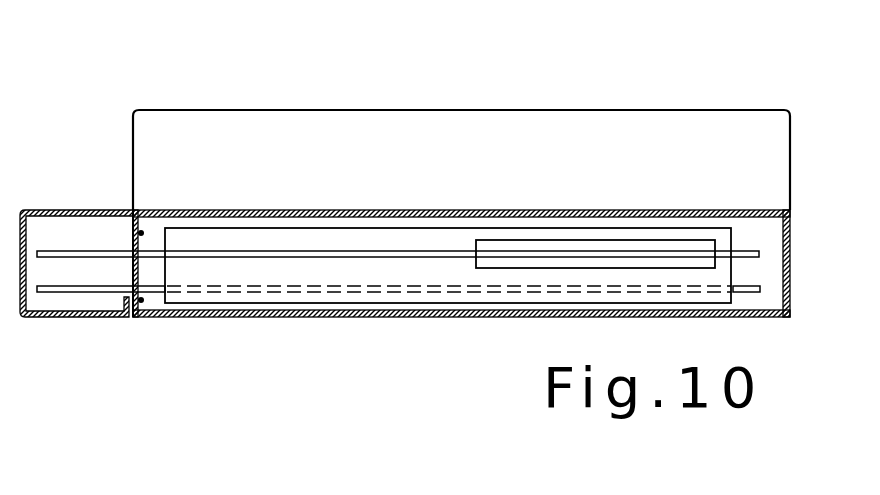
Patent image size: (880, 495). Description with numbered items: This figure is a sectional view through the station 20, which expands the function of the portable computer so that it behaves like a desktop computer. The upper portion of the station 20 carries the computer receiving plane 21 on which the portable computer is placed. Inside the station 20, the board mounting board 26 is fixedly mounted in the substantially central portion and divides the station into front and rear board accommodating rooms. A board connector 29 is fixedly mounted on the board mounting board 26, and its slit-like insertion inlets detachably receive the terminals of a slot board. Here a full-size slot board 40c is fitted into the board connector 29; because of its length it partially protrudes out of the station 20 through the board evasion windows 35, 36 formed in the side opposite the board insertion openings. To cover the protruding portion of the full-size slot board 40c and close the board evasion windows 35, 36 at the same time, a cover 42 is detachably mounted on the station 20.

The station 20 is at (686, 103).
The computer receiving plane 21 is at (453, 208).
The cover 42 is at (95, 211).
The board mounting board 26 is at (367, 237).
The board connector 29 is at (612, 245).
The full-size slot board 40c is at (275, 253).
The board evasion window 35 is at (137, 262).
The board evasion window 36 is at (141, 266).